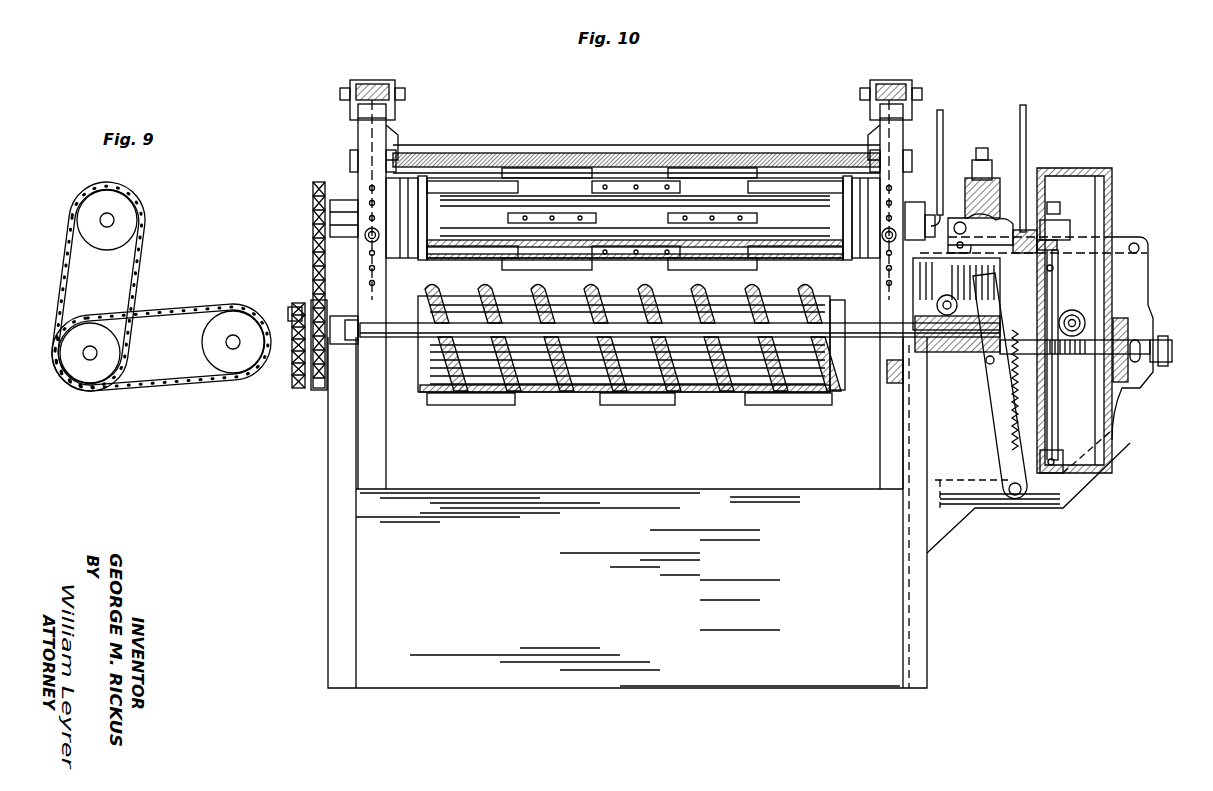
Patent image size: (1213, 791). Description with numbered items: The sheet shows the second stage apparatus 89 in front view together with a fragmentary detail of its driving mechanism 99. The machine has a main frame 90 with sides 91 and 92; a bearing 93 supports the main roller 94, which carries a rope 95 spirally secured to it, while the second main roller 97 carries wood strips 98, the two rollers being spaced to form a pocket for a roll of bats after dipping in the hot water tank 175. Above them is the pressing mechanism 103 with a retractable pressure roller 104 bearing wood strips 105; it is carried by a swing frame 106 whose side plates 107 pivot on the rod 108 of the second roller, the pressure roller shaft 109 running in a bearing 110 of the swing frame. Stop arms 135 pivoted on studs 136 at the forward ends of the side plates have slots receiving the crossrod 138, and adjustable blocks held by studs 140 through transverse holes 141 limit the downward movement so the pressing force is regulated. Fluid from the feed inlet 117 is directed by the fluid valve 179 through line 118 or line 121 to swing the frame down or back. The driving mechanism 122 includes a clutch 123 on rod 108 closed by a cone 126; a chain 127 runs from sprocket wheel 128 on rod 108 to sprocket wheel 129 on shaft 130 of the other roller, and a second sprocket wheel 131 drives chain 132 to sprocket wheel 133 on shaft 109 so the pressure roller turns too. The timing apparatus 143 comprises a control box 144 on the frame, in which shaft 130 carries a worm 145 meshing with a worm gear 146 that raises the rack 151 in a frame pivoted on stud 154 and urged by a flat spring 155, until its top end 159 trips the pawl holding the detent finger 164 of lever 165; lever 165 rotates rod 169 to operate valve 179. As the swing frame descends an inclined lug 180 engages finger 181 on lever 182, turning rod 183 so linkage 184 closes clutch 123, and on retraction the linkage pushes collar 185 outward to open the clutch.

In FIG. 10, the second stage apparatus 89 is at (740, 117).
In FIG. 10, the main frame 90 is at (327, 604).
In FIG. 10, the side 91 is at (338, 556).
In FIG. 10, the side 92 is at (915, 608).
In FIG. 10, the bearing 93 is at (341, 318).
In FIG. 10, the main roller 94 is at (462, 296).
In FIG. 10, the rope 95 is at (643, 291).
In FIG. 10, the second main roller 97 is at (633, 402).
In FIG. 10, the wood strips 98 is at (527, 406).
In FIG. 9, the driving mechanism 99 is at (156, 297).
In FIG. 10, the pressing mechanism 103 is at (607, 131).
In FIG. 10, the pressure roller 104 is at (697, 190).
In FIG. 10, the wood strips 105 is at (526, 177).
In FIG. 10, the swing frame 106 is at (780, 145).
In FIG. 10, the side plates 107 is at (366, 112).
In FIG. 9, the rod 108 is at (87, 357).
In FIG. 10, the rod 108 is at (1172, 351).
In FIG. 9, the shaft 109 is at (105, 218).
In FIG. 10, the bearing 110 is at (350, 205).
In FIG. 10, the feed inlet 117 is at (957, 218).
In FIG. 10, the line 118 is at (1027, 119).
In FIG. 10, the line 121 is at (944, 121).
In FIG. 10, the driving mechanism 122 is at (1152, 319).
In FIG. 10, the clutch 123 is at (982, 414).
In FIG. 10, the cone 126 is at (1127, 346).
In FIG. 9, the chain 127 is at (170, 384).
In FIG. 9, the sprocket wheel 128 is at (89, 372).
In FIG. 9, the sprocket wheel 129 is at (237, 324).
In FIG. 10, the sprocket wheel 129 is at (298, 389).
In FIG. 9, the shaft 130 is at (234, 352).
In FIG. 10, the shaft 130 is at (291, 321).
In FIG. 9, the second sprocket wheel 131 is at (120, 207).
In FIG. 10, the second sprocket wheel 131 is at (313, 208).
In FIG. 9, the chain 132 is at (137, 262).
In FIG. 10, the sprocket wheel 133 is at (318, 392).
In FIG. 10, the stop arms 135 is at (370, 138).
In FIG. 10, the studs 136 is at (402, 97).
In FIG. 10, the crossrod 138 is at (858, 324).
In FIG. 10, the studs 140 is at (368, 242).
In FIG. 10, the transverse holes 141 is at (886, 268).
In FIG. 10, the timing apparatus 143 is at (1056, 428).
In FIG. 10, the control box 144 is at (1078, 172).
In FIG. 10, the worm 145 is at (1075, 356).
In FIG. 10, the worm gear 146 is at (1080, 308).
In FIG. 10, the rack 151 is at (1043, 262).
In FIG. 10, the stud 154 is at (1049, 473).
In FIG. 10, the flat spring 155 is at (1051, 270).
In FIG. 10, the top end 159 is at (1054, 202).
In FIG. 10, the detent finger 164 is at (1057, 243).
In FIG. 10, the lever 165 is at (1070, 226).
In FIG. 10, the rod 169 is at (1028, 254).
In FIG. 10, the tank 175 is at (597, 690).
In FIG. 10, the fluid valve 179 is at (996, 178).
In FIG. 10, the inclined lug 180 is at (928, 225).
In FIG. 10, the finger 181 is at (922, 282).
In FIG. 10, the lever 182 is at (963, 246).
In FIG. 10, the rod 183 is at (944, 313).
In FIG. 10, the linkage 184 is at (1140, 250).
In FIG. 10, the collar 185 is at (1140, 360).